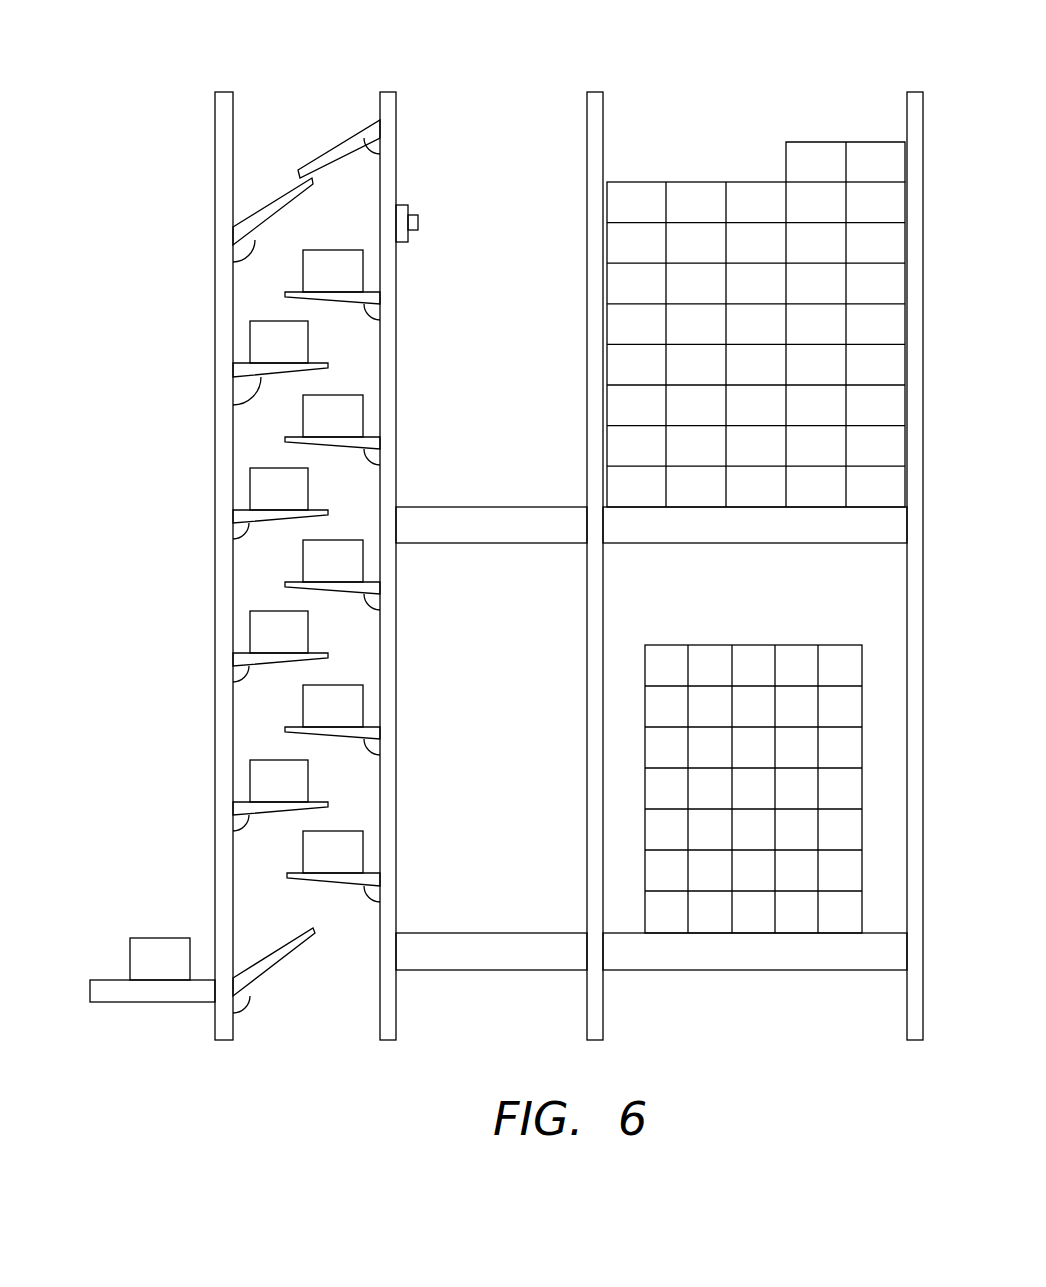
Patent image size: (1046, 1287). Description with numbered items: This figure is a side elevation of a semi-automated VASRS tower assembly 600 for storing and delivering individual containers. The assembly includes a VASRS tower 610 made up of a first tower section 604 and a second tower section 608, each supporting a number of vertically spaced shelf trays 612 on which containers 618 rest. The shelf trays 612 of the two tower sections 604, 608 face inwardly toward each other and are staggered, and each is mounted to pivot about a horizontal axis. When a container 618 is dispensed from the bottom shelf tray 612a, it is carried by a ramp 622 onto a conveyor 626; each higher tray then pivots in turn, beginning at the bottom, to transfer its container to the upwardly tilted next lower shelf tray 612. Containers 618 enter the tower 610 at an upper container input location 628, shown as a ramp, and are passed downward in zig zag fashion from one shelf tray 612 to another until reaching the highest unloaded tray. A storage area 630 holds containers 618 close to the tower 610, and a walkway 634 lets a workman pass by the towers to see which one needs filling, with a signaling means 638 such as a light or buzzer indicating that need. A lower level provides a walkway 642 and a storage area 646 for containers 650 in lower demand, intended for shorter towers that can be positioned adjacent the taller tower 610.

The semi-automated VASRS tower assembly 600 is at (512, 128).
The first tower section 604 is at (216, 216).
The second tower section 608 is at (397, 164).
The VASRS tower 610 is at (192, 131).
The shelf tray 612 is at (267, 372).
The bottom shelf tray 612a is at (333, 881).
The container 618 is at (257, 335).
The ramp 622 is at (273, 961).
The conveyor 626 is at (171, 994).
The upper container input location 628 is at (357, 138).
The storage area 630 is at (720, 544).
The walkway 634 is at (493, 544).
The signaling means 638 is at (419, 222).
The lower level walkway 642 is at (523, 971).
The lower level storage area 646 is at (775, 971).
The containers 650 is at (652, 781).